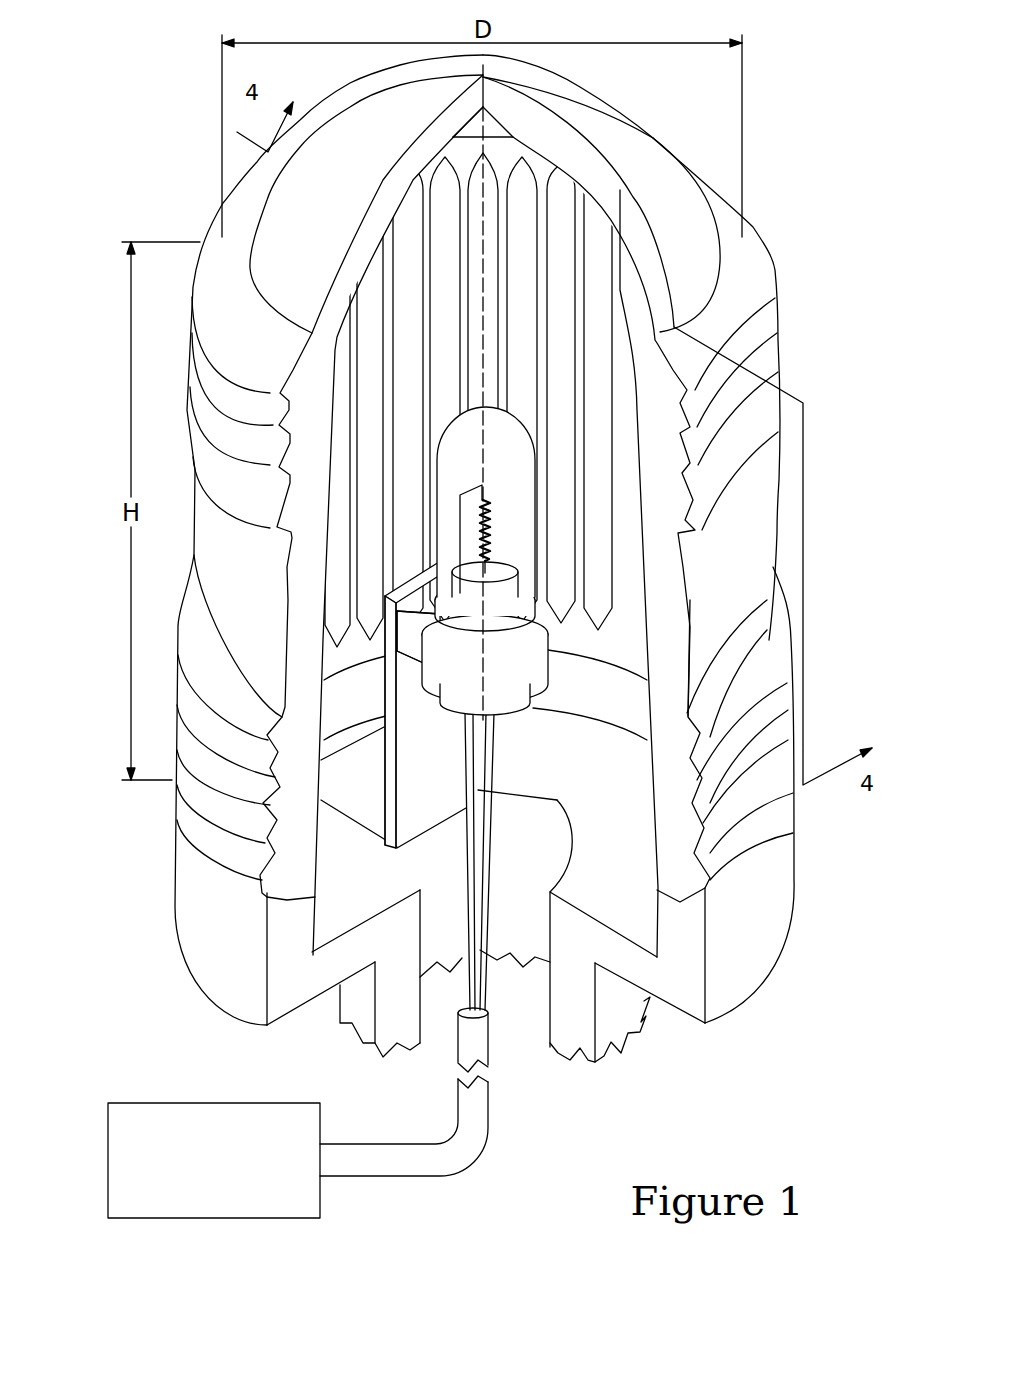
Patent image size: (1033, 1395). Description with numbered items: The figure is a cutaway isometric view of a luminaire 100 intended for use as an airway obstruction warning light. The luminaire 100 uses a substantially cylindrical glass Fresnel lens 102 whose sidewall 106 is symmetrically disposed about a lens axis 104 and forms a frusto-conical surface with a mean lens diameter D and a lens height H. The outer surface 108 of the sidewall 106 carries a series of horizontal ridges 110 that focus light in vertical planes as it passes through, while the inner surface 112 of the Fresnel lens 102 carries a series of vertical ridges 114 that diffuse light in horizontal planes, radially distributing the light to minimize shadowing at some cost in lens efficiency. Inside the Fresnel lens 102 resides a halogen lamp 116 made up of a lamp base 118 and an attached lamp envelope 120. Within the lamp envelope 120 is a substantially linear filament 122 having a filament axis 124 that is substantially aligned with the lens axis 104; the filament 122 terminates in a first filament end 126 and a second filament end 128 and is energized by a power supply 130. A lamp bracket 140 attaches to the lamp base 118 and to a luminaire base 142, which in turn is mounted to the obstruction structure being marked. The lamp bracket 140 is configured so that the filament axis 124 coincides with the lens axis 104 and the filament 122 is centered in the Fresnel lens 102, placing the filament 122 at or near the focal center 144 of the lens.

The luminaire 100 is at (760, 130).
The Fresnel lens 102 is at (802, 320).
The lens axis 104 is at (483, 233).
The sidewall 106 is at (678, 593).
The outer surface 108 is at (757, 448).
The horizontal ridges 110 is at (705, 767).
The inner surface 112 is at (618, 647).
The vertical ridges 114 is at (447, 263).
The halogen lamp 116 is at (505, 393).
The lamp base 118 is at (438, 600).
The lamp envelope 120 is at (447, 420).
The filament 122 is at (503, 504).
The filament axis 124 is at (487, 457).
The first filament end 126 is at (490, 560).
The second filament end 128 is at (483, 503).
The power supply 130 is at (230, 1103).
The lamp bracket 140 is at (427, 770).
The luminaire base 142 is at (730, 968).
The focal center 144 is at (470, 493).